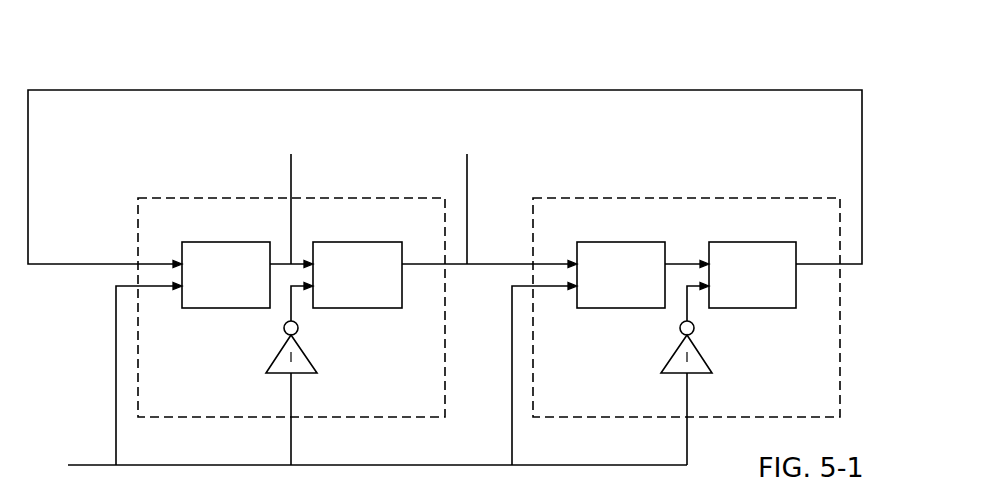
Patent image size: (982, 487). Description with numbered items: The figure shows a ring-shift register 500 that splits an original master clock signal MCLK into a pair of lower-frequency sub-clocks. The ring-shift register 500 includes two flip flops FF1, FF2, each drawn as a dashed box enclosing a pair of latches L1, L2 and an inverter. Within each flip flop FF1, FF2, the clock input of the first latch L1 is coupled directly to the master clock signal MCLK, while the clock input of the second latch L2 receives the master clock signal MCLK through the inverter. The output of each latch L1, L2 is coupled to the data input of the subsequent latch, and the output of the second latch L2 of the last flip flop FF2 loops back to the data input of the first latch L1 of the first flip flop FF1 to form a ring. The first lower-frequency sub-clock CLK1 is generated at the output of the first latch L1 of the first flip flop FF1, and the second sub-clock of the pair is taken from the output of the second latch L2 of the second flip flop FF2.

The ring-shift register 500 is at (93, 67).
The first flip flop FF1 is at (280, 331).
The second flip flop FF2 is at (676, 331).
The first latch L1 is at (226, 275).
The second latch L2 is at (357, 275).
The first lower-frequency sub-clock CLK1 is at (291, 198).
The original master clock signal MCLK is at (348, 465).